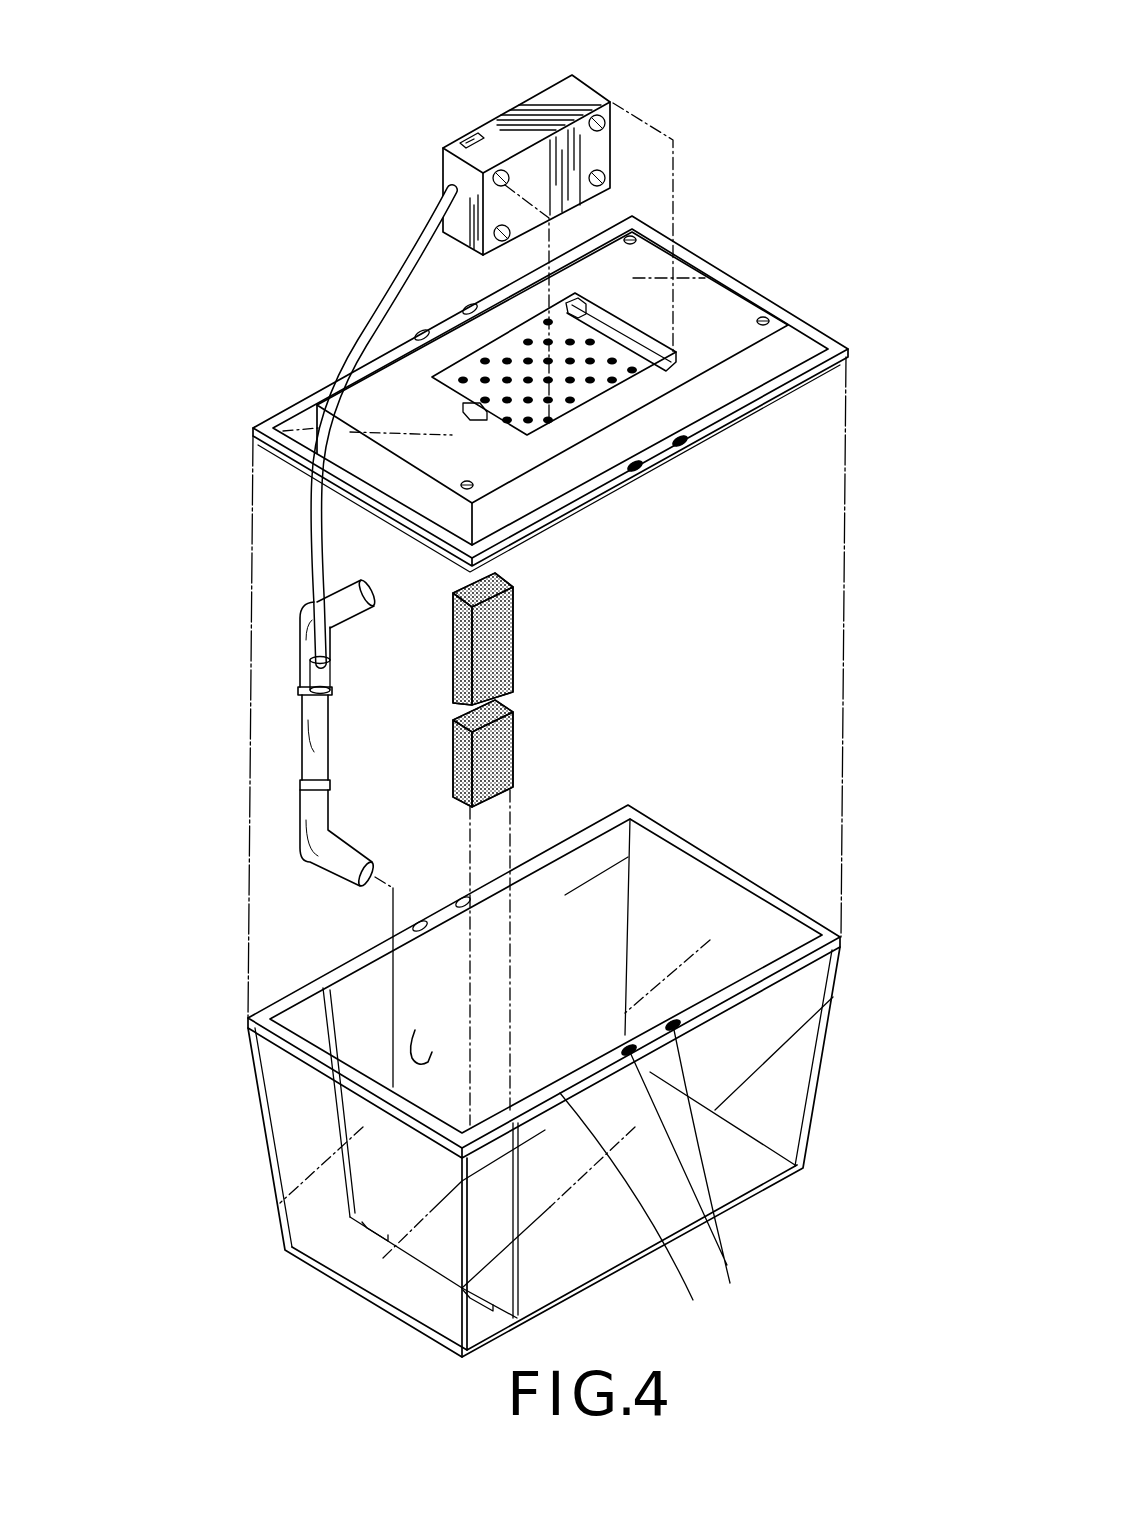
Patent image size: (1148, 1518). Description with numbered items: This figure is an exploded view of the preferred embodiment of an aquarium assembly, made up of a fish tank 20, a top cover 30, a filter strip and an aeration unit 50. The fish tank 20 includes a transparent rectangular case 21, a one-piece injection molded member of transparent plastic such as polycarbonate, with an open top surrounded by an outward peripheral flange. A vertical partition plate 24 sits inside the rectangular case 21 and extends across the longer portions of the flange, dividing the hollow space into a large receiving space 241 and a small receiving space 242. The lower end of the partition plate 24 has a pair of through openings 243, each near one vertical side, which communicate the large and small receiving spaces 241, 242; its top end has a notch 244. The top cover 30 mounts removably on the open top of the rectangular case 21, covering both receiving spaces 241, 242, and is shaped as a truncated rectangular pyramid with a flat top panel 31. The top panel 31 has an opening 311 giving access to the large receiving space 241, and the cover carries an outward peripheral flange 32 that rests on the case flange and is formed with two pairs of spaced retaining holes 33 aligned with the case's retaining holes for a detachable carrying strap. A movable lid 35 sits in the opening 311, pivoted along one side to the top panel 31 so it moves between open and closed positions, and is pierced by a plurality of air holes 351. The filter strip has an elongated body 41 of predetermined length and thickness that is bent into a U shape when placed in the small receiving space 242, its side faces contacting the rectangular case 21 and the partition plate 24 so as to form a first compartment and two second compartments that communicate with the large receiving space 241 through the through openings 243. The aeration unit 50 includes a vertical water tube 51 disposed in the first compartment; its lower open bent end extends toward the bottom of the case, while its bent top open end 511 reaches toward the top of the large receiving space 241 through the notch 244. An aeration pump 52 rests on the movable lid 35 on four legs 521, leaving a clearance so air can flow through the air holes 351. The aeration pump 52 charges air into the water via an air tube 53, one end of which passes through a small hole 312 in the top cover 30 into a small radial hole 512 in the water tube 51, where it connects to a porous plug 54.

The fish tank 20 is at (840, 986).
The transparent rectangular case 21 is at (773, 1122).
The vertical partition plate 24 is at (293, 1015).
The large receiving space 241 is at (677, 887).
The small receiving space 242 is at (297, 1010).
The through openings 243 is at (367, 1232).
The notch 244 is at (415, 1030).
The top cover 30 is at (792, 308).
The flat top panel 31 is at (713, 305).
The opening 311 is at (618, 328).
The small hole 312 is at (770, 322).
The outward peripheral flange 32 is at (740, 410).
The spaced retaining holes 33 is at (680, 443).
The movable lid 35 is at (450, 378).
The air holes 351 is at (480, 352).
The elongated body 41 is at (515, 660).
The aeration unit 50 is at (441, 172).
The vertical water tube 51 is at (302, 728).
The top open end 511 is at (347, 609).
The small radial hole 512 is at (313, 604).
The aeration pump 52 is at (503, 142).
The legs 521 is at (604, 126).
The air tube 53 is at (407, 253).
The porous plug 54 is at (310, 678).